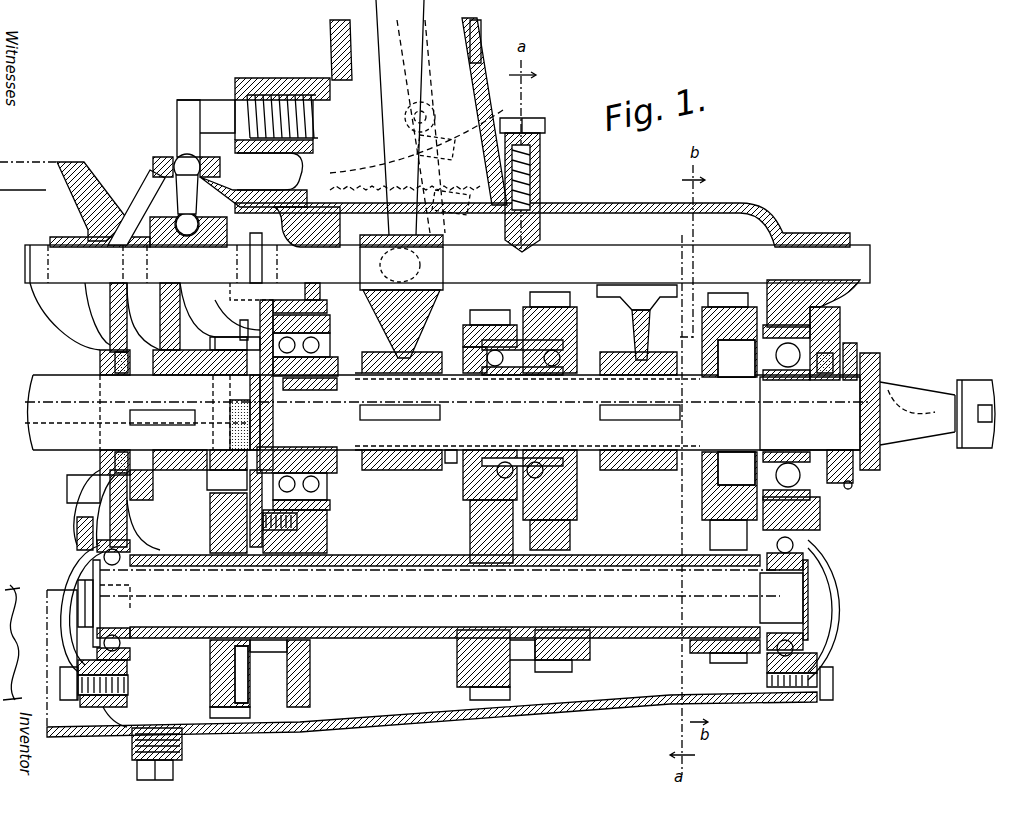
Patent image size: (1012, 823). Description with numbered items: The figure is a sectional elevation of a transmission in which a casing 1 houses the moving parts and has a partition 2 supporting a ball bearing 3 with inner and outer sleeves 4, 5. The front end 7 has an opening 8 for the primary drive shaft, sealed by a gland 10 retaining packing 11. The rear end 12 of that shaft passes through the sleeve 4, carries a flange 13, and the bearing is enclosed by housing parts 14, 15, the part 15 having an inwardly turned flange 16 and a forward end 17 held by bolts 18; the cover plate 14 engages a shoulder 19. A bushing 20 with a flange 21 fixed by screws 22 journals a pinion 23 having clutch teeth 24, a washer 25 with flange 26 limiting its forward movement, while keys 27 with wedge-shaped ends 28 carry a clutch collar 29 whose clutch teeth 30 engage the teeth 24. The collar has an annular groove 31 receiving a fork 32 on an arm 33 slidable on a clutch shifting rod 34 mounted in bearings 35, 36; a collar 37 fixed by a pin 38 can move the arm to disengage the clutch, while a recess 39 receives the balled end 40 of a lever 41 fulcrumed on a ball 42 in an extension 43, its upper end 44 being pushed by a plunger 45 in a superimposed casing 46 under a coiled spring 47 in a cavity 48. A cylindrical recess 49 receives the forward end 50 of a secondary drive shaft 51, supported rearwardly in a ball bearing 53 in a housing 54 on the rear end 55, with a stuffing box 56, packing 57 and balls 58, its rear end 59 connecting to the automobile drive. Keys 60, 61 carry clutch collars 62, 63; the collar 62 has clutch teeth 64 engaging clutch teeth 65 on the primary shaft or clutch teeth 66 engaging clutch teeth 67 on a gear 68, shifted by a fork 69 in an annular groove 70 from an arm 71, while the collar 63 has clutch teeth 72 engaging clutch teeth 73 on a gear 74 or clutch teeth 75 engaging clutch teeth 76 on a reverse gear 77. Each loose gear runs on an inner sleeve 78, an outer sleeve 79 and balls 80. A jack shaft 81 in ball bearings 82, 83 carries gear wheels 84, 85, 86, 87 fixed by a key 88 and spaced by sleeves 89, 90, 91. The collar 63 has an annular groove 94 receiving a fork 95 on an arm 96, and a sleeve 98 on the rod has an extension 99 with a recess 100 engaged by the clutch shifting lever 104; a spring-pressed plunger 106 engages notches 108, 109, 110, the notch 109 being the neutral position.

The casing 1 is at (430, 715).
The partition 2 is at (320, 660).
The ball bearing 3 is at (330, 492).
The inner sleeve 4 is at (330, 480).
The outer sleeve 5 is at (335, 505).
The front end 7 is at (83, 489).
The opening 8 is at (135, 480).
The gland or stuffing box 10 is at (100, 458).
The packing 11 is at (100, 468).
The rear end of primary drive shaft 12 is at (363, 342).
The flange 13 is at (345, 340).
The front cover plate 14 is at (260, 310).
The housing part 15 is at (328, 308).
The inwardly turned flange 16 is at (332, 333).
The forward end 17 is at (283, 300).
The bolts 18 is at (240, 325).
The shoulder 19 is at (267, 467).
The bushing 20 is at (250, 400).
The flange 21 is at (227, 412).
The screws 22 is at (250, 450).
The pinion 23 is at (225, 340).
The clutch teeth 24 is at (200, 475).
The washer 25 is at (215, 445).
The flange 26 is at (200, 374).
The keys 27 is at (140, 410).
The wedge-shaped ends 28 is at (162, 426).
The clutch collar 29 is at (152, 360).
The clutch teeth 30 is at (179, 491).
The annular groove 31 is at (157, 491).
The fork 32 is at (126, 412).
The arm 33 is at (210, 238).
The clutch shifting rod 34 is at (447, 258).
The bearing 35 is at (80, 240).
The bearing 36 is at (815, 243).
The collar 37 is at (272, 227).
The pin 38 is at (250, 268).
The recess 39 is at (165, 265).
The balled end 40 is at (191, 243).
The lever 41 is at (183, 188).
The ball 42 is at (178, 157).
The extension 43 is at (148, 178).
The upper end of lever 44 is at (198, 100).
The plunger 45 is at (206, 116).
The superimposed casing 46 is at (285, 72).
The coiled spring 47 is at (365, 112).
The cavity 48 is at (300, 135).
The cylindrical recess 49 is at (337, 422).
The forward end of secondary drive shaft 50 is at (447, 412).
The secondary drive shaft 51 is at (505, 400).
The ball bearing 53 is at (840, 327).
The housing 54 is at (838, 305).
The rear end of casing 55 is at (778, 240).
The stuffing box 56 is at (848, 495).
The packing 57 is at (845, 510).
The balls 58 is at (795, 380).
The rear end of secondary drive shaft 59 is at (925, 455).
The keys 60 is at (400, 403).
The keys 61 is at (640, 399).
The clutch collar 62 is at (424, 470).
The clutch collar 63 is at (635, 475).
The clutch teeth 64 is at (382, 487).
The clutch teeth 65 is at (336, 369).
The clutch teeth 66 is at (445, 470).
The clutch teeth 67 is at (455, 452).
The gear 68 is at (465, 325).
The fork 69 is at (430, 350).
The annular groove 70 is at (400, 455).
The arm 71 is at (360, 280).
The clutch teeth 72 is at (604, 340).
The clutch teeth 73 is at (610, 475).
The gear 74 is at (577, 326).
The clutch teeth 75 is at (638, 375).
The clutch teeth 76 is at (695, 450).
The reverse gear 77 is at (702, 512).
The inner sleeve 78 is at (648, 412).
The outer sleeve 79 is at (496, 340).
The balls 80 is at (587, 387).
The jack shaft 81 is at (440, 596).
The ball bearing 82 is at (130, 655).
The ball bearing 83 is at (808, 645).
The gear wheel 84 is at (212, 655).
The gear wheel 85 is at (470, 660).
The gear wheel 86 is at (570, 660).
The gear wheel 87 is at (730, 653).
The key 88 is at (440, 548).
The spacing sleeve 89 is at (160, 595).
The spacing sleeve 90 is at (350, 600).
The spacing sleeve 91 is at (630, 625).
The annular groove 94 is at (655, 478).
The fork 95 is at (648, 355).
The arm 96 is at (652, 322).
The sleeve 98 is at (420, 240).
The extension 99 is at (445, 263).
The recess 100 is at (428, 300).
The clutch shifting lever 104 is at (395, 72).
The spring-pressed plunger 106 is at (512, 185).
The notch 108 is at (512, 250).
The notch 109 is at (525, 250).
The notch 110 is at (538, 250).